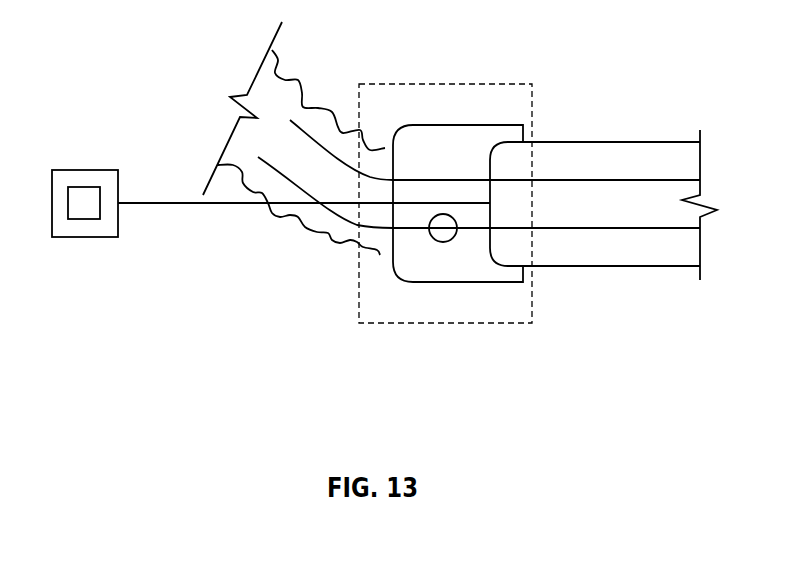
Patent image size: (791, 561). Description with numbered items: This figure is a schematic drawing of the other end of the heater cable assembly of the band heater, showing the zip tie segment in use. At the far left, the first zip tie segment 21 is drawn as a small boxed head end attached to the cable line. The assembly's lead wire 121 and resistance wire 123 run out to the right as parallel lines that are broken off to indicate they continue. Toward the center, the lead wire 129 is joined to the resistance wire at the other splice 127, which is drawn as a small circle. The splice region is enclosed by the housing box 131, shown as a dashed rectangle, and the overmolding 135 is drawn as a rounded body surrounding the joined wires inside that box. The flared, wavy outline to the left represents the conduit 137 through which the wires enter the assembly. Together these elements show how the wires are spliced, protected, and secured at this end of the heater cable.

The first zip tie segment 21 is at (160, 202).
The lead wire 121 is at (605, 178).
The resistance wire 123 is at (607, 230).
The splice 127 is at (443, 232).
The lead wire 129 is at (267, 163).
The housing box 131 is at (375, 308).
The overmolding 135 is at (467, 123).
The conduit 137 is at (278, 216).